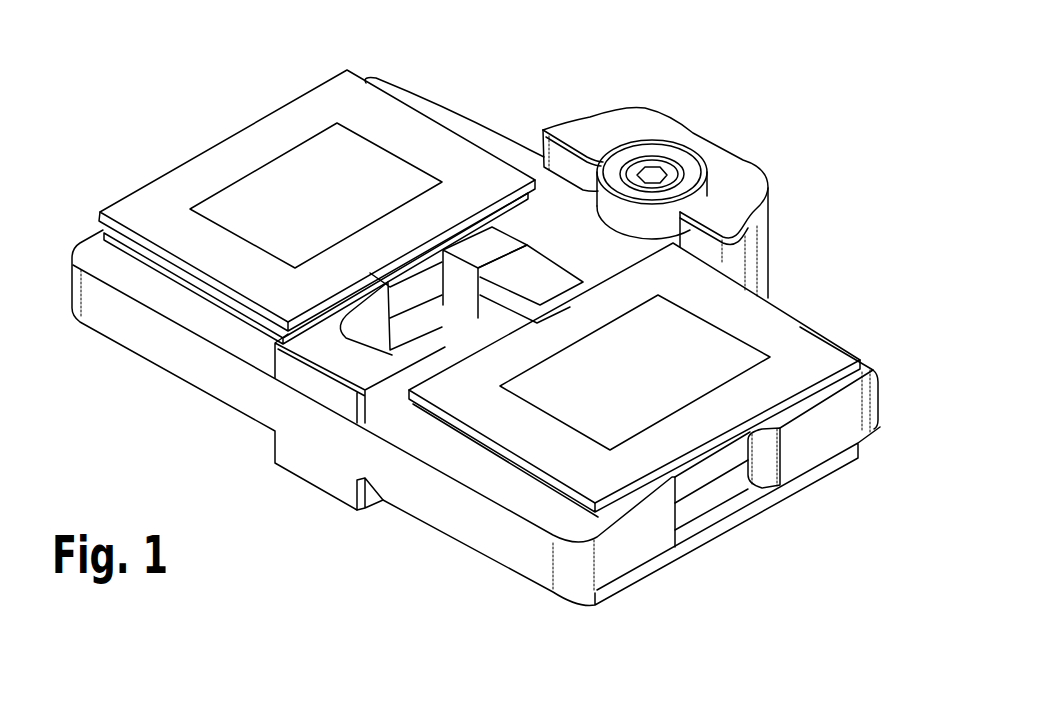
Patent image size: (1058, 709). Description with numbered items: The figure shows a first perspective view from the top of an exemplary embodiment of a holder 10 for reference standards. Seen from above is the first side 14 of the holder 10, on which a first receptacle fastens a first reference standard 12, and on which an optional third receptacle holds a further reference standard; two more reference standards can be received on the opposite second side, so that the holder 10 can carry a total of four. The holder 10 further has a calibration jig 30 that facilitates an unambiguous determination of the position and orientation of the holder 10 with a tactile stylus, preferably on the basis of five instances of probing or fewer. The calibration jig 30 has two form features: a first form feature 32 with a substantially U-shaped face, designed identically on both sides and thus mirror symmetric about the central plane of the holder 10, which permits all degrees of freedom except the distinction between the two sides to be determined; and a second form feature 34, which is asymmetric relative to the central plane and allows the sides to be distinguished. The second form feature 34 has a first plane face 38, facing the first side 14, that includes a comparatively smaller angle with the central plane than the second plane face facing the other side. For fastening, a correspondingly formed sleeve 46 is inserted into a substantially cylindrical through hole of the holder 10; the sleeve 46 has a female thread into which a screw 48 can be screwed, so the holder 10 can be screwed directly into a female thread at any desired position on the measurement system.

The holder 10 is at (848, 100).
The first reference standard 12 is at (320, 100).
The first side 14 is at (564, 167).
The calibration jig 30 is at (557, 284).
The first form feature 32 is at (383, 337).
The second form feature 34 is at (645, 373).
The first plane face 38 is at (527, 303).
The sleeve 46 is at (683, 160).
The screw 48 is at (650, 163).